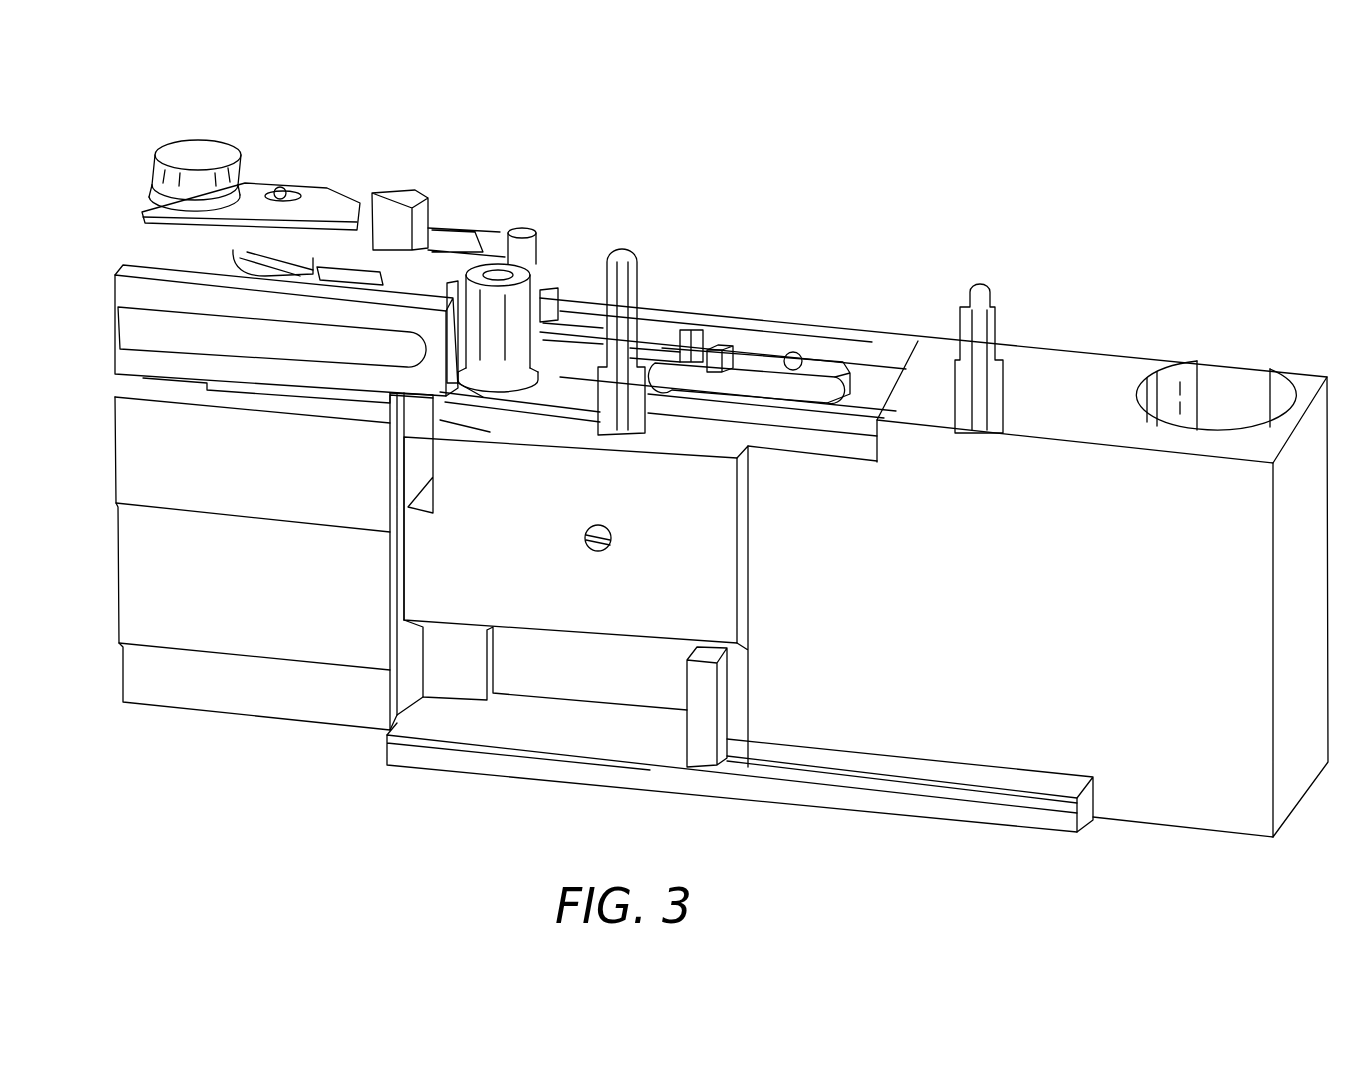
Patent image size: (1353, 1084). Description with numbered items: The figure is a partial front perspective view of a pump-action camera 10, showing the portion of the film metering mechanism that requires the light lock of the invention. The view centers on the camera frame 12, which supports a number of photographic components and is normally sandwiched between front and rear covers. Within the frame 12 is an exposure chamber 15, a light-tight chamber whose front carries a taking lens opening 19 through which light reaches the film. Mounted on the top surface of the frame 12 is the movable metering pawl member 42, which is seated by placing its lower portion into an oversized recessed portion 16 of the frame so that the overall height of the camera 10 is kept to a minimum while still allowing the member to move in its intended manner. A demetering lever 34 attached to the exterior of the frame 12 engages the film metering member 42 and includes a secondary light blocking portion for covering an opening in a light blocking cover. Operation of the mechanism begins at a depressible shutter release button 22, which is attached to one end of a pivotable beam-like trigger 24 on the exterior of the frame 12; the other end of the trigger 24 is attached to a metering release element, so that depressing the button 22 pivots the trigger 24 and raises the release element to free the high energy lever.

The camera 10 is at (1052, 256).
The frame 12 is at (1114, 353).
The exposure chamber 15 is at (717, 586).
The recessed portion 16 is at (876, 380).
The taking lens opening 19 is at (584, 548).
The shutter release button 22 is at (197, 152).
The trigger 24 is at (443, 262).
The demetering lever 34 is at (575, 318).
The metering pawl member 42 is at (760, 352).